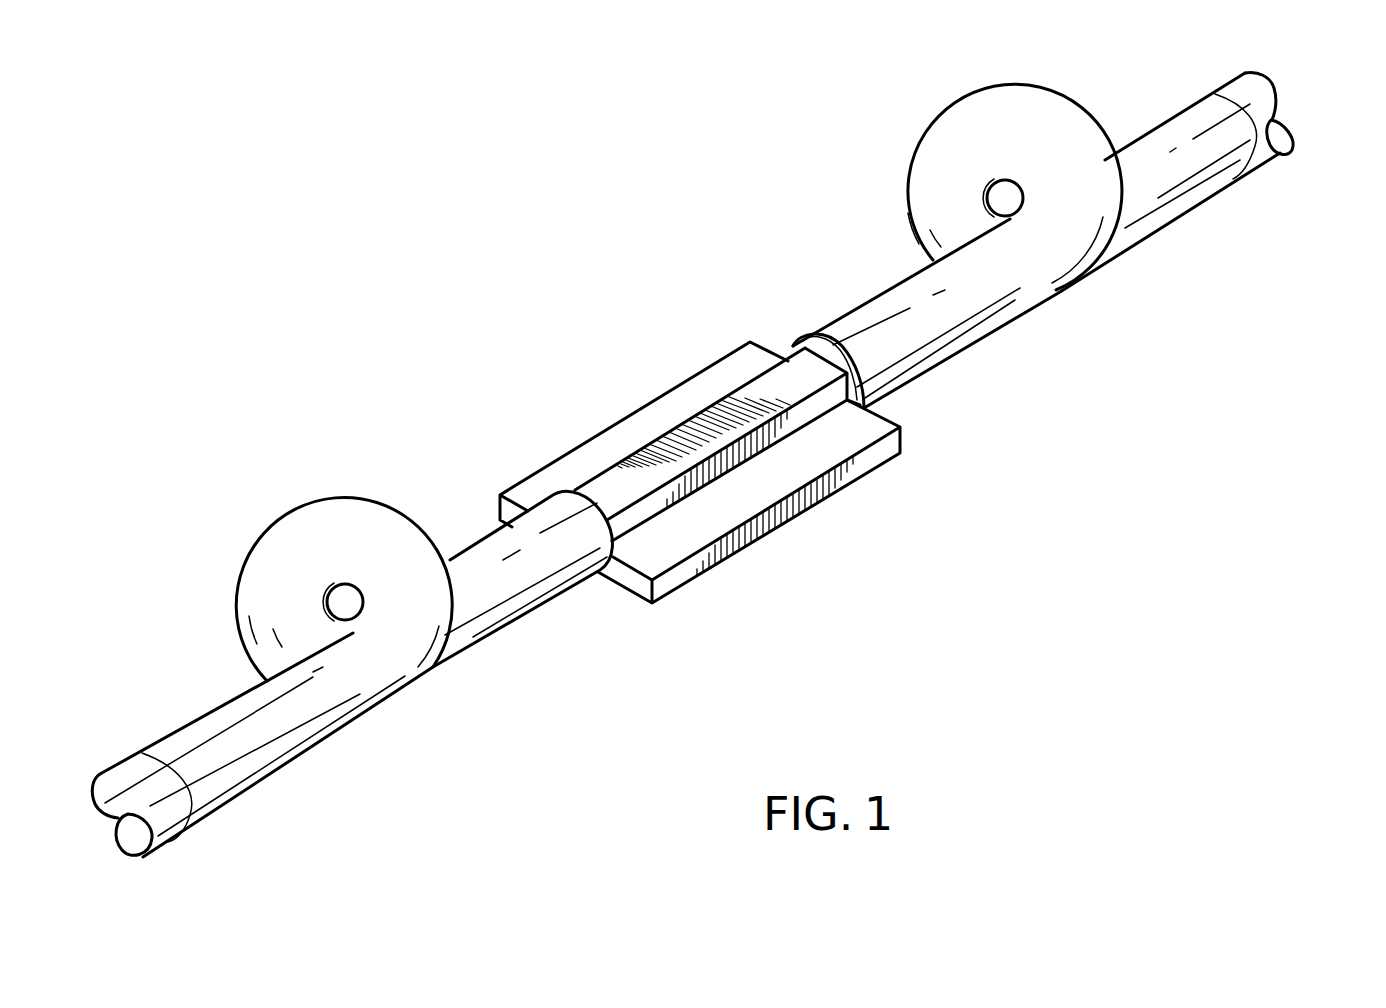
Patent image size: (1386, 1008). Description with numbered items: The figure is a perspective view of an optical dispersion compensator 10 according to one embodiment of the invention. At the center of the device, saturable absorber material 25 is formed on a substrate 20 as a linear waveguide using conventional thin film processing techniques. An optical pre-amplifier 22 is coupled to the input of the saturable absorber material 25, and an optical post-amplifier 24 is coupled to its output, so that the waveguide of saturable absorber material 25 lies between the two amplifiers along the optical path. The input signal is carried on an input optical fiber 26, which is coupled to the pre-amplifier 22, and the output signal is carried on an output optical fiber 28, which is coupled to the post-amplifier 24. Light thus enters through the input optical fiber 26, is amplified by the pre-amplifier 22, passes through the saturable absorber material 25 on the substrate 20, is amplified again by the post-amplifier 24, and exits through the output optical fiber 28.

The optical dispersion compensator 10 is at (655, 173).
The substrate 20 is at (714, 466).
The optical pre-amplifier 22 is at (353, 697).
The optical post-amplifier 24 is at (1010, 266).
The saturable absorber material 25 is at (690, 440).
The input optical fiber 26 is at (160, 819).
The output optical fiber 28 is at (1263, 112).